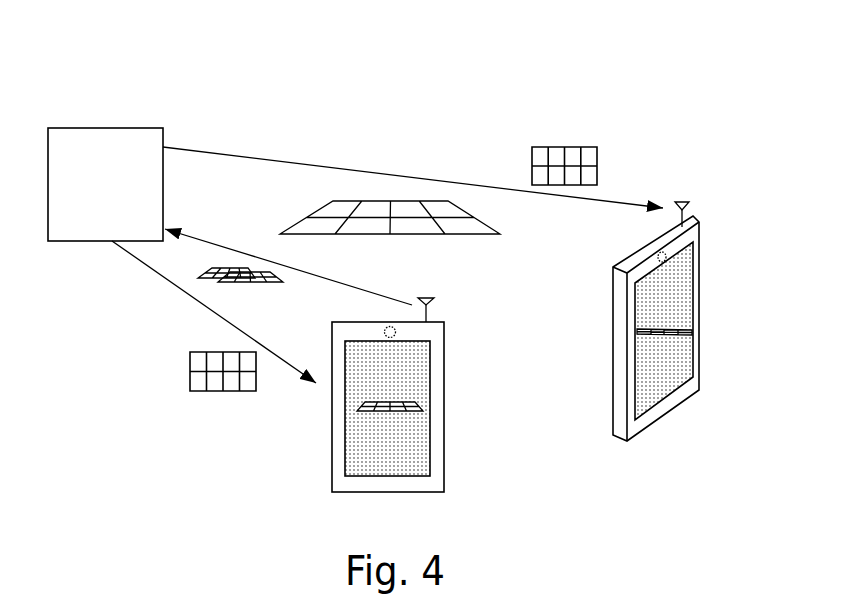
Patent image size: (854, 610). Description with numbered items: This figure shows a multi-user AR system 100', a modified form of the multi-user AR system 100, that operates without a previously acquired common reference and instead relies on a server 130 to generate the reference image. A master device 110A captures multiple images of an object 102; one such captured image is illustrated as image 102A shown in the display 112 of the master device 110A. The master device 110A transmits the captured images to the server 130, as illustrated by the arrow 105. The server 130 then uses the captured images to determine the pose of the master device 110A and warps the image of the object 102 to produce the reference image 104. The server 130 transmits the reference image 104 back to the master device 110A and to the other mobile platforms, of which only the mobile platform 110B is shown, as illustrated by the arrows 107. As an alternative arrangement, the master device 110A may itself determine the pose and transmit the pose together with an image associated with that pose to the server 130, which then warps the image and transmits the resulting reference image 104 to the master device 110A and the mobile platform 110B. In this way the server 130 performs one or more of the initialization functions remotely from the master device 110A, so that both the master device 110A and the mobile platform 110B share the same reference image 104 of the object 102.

The multi-user AR system 100' is at (84, 31).
The server 130 is at (113, 128).
The arrows 107 is at (253, 158).
The arrow 105 is at (357, 288).
The object 102 is at (483, 223).
The reference image 104 is at (597, 150).
The multi-user AR system 100 is at (391, 407).
The master device 110A is at (444, 470).
The display 112 is at (346, 474).
The image of the object 102A is at (423, 408).
The mobile platform 110B is at (700, 230).